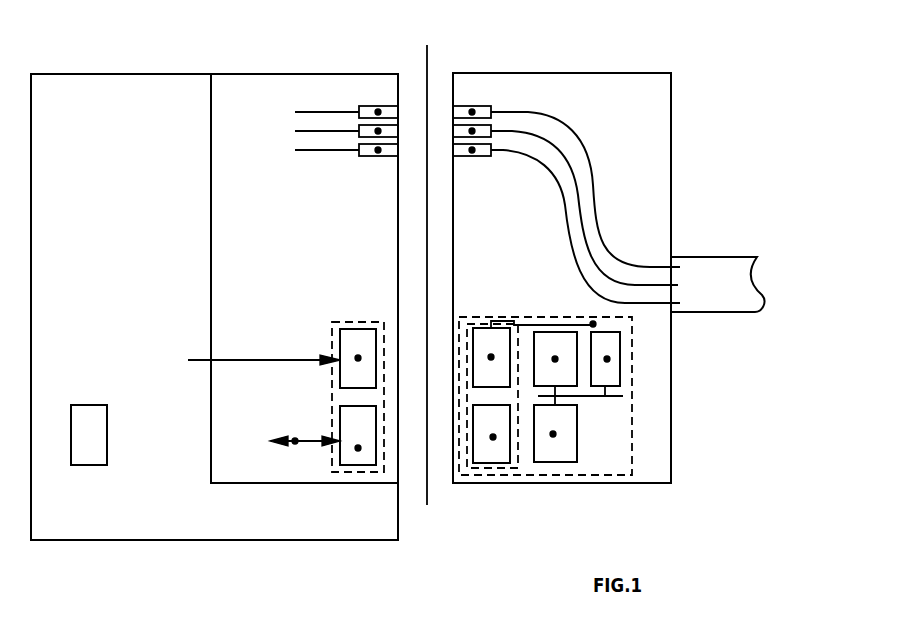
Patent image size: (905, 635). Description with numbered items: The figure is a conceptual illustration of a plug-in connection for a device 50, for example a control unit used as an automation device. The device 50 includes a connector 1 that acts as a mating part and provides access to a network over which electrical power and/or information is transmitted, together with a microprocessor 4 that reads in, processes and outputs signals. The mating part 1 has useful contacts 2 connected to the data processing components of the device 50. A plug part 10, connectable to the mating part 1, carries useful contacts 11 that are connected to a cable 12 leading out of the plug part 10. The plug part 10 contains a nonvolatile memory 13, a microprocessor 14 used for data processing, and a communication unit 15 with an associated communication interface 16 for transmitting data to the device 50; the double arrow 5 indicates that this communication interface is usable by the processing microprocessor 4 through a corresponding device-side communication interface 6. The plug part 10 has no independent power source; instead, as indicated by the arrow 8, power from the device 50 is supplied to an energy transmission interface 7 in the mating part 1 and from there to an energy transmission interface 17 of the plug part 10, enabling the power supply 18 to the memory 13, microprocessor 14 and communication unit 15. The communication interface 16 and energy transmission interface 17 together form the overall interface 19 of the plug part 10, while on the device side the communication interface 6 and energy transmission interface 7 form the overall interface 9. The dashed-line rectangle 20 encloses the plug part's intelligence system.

The connector 1 is at (210, 118).
The useful contacts 2 is at (378, 150).
The microprocessor 4 is at (80, 467).
The double arrow 5 is at (295, 441).
The communication interface 6 is at (358, 448).
The energy transmission interface 7 is at (358, 358).
The arrow 8 is at (263, 362).
The overall interface 9 is at (343, 473).
The plug part 10 is at (595, 73).
The useful contacts 11 is at (472, 150).
The cable 12 is at (705, 270).
The nonvolatile memory 13 is at (607, 359).
The microprocessor 14 is at (555, 359).
The communication unit 15 is at (553, 434).
The communication interface 16 is at (493, 437).
The energy transmission interface 17 is at (491, 357).
The power supply 18 is at (593, 324).
The overall interface 19 is at (518, 455).
The dashed-line rectangle 20 is at (633, 444).
The device 50 is at (145, 541).